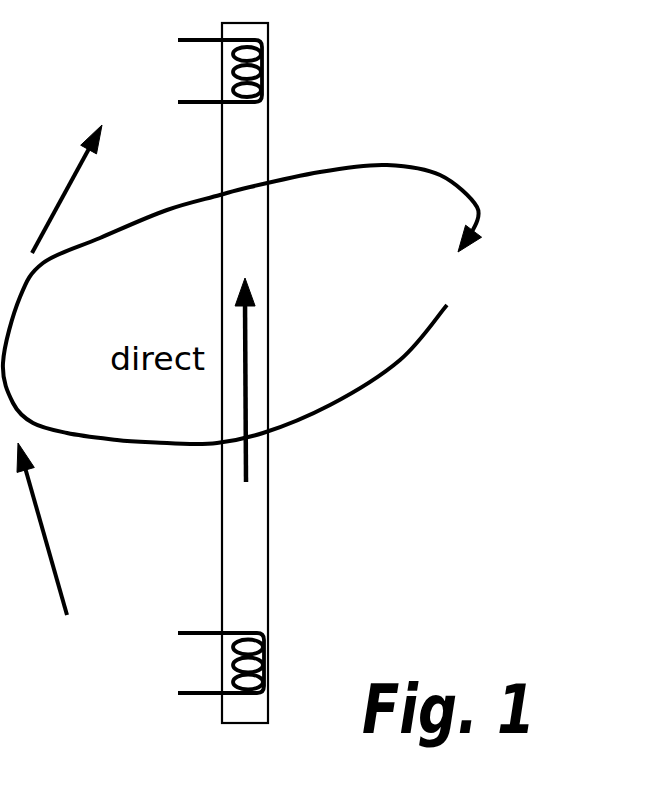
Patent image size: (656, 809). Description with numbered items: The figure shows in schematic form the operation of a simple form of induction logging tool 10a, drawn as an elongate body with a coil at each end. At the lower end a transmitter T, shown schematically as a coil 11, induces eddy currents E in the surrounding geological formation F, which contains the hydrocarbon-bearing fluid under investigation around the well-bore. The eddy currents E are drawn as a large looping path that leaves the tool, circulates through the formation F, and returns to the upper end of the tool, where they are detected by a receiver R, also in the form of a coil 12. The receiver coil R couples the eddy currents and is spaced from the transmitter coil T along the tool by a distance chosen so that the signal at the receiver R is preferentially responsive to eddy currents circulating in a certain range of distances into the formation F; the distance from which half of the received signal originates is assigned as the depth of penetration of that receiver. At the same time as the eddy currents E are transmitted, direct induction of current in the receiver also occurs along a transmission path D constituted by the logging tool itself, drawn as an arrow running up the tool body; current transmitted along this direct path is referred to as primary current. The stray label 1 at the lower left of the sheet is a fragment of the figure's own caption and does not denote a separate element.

The induction tool 10a is at (250, 567).
The coil 11 is at (240, 715).
The coil 12 is at (267, 78).
The transmission path D is at (250, 365).
The eddy currents E is at (400, 360).
The formation F is at (546, 562).
The receiver R is at (78, 150).
The transmitter T is at (73, 563).
The device 1 is at (9, 714).